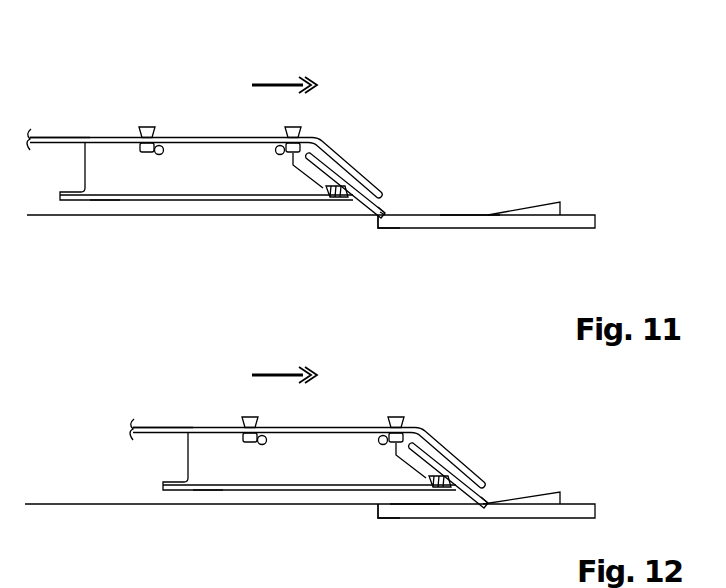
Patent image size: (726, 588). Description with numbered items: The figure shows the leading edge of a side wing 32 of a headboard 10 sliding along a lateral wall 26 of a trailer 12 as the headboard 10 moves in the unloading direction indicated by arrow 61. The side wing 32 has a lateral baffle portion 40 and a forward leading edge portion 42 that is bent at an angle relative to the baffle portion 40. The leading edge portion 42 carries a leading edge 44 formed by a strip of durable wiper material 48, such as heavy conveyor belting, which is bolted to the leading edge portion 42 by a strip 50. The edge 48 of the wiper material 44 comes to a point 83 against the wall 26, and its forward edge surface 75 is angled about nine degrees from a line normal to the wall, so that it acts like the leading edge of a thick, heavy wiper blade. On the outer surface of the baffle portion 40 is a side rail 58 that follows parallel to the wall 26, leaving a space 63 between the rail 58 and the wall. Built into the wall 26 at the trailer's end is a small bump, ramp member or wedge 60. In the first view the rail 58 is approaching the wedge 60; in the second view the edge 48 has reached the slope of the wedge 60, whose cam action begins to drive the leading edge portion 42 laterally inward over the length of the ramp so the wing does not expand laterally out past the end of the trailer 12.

In FIG. 11, the headboard 10 is at (540, 203).
In FIG. 11, the trailer 12 is at (565, 233).
In FIG. 12, the trailer 12 is at (515, 522).
In FIG. 11, the trailer lateral wall 26 is at (469, 215).
In FIG. 12, the trailer lateral wall 26 is at (408, 498).
In FIG. 11, the side wing 32 is at (122, 133).
In FIG. 12, the side wing 32 is at (357, 425).
In FIG. 11, the lateral baffle portion 40 is at (55, 136).
In FIG. 12, the lateral baffle portion 40 is at (157, 425).
In FIG. 11, the forward leading edge portion 42 is at (328, 146).
In FIG. 12, the forward leading edge portion 42 is at (438, 435).
In FIG. 11, the leading edge 44 is at (352, 178).
In FIG. 12, the leading edge 44 is at (448, 475).
In FIG. 11, the strip of wiper material 48 is at (383, 193).
In FIG. 12, the strip of wiper material 48 is at (485, 481).
In FIG. 11, the strip 50 is at (358, 200).
In FIG. 12, the strip 50 is at (423, 465).
In FIG. 11, the side rail 58 is at (181, 204).
In FIG. 12, the side rail 58 is at (278, 496).
In FIG. 12, the wedge 60 is at (537, 492).
In FIG. 11, the arrow 61 is at (286, 80).
In FIG. 12, the arrow 61 is at (277, 375).
In FIG. 11, the space 63 is at (105, 207).
In FIG. 12, the space 63 is at (185, 497).
In FIG. 11, the forward edge surface 75 is at (386, 201).
In FIG. 11, the point 83 is at (385, 220).
In FIG. 12, the point 83 is at (489, 507).